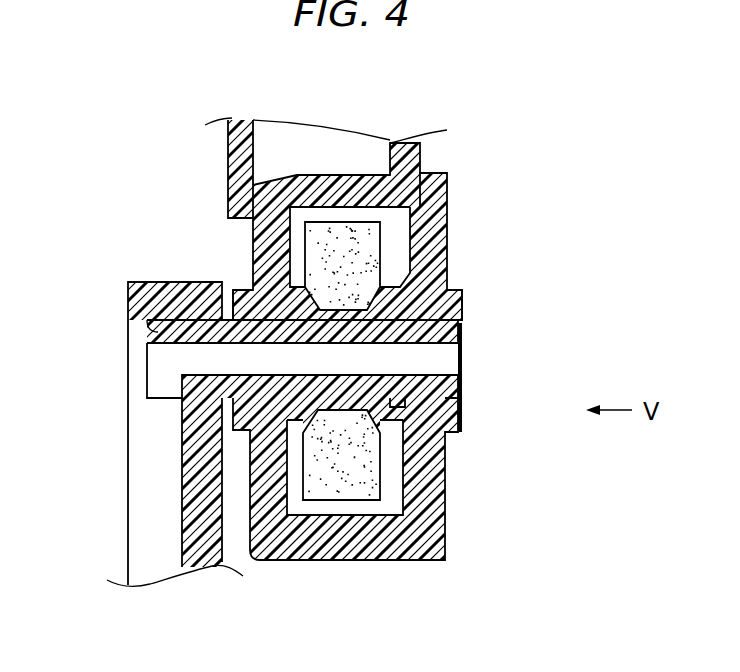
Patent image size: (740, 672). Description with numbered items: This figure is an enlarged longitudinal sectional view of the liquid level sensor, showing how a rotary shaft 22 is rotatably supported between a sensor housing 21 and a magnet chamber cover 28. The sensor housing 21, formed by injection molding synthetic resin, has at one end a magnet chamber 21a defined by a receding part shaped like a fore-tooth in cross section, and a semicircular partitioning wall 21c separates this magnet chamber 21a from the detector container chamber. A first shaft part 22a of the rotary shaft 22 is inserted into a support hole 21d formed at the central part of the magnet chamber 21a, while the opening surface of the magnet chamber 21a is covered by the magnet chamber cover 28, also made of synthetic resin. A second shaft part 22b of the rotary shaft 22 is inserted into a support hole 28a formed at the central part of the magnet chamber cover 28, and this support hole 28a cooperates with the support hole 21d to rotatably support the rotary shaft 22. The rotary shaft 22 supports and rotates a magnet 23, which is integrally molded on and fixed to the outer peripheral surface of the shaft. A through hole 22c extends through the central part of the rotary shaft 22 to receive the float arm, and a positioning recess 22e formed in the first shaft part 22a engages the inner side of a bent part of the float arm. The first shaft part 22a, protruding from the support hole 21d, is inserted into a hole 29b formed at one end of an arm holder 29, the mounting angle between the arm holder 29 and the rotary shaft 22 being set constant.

The sensor housing 21 is at (287, 562).
The magnet chamber 21a is at (393, 497).
The partitioning wall 21c is at (332, 177).
The support hole 21d is at (297, 337).
The rotary shaft 22 is at (240, 297).
The first shaft part 22a is at (160, 307).
The second shaft part 22b is at (447, 432).
The through hole 22c is at (290, 347).
The positioning recess 22e is at (152, 400).
The magnet 23 is at (373, 500).
The magnet chamber cover 28 is at (438, 272).
The support hole 28a is at (408, 327).
The arm holder 29 is at (145, 513).
The hole 29b is at (143, 325).